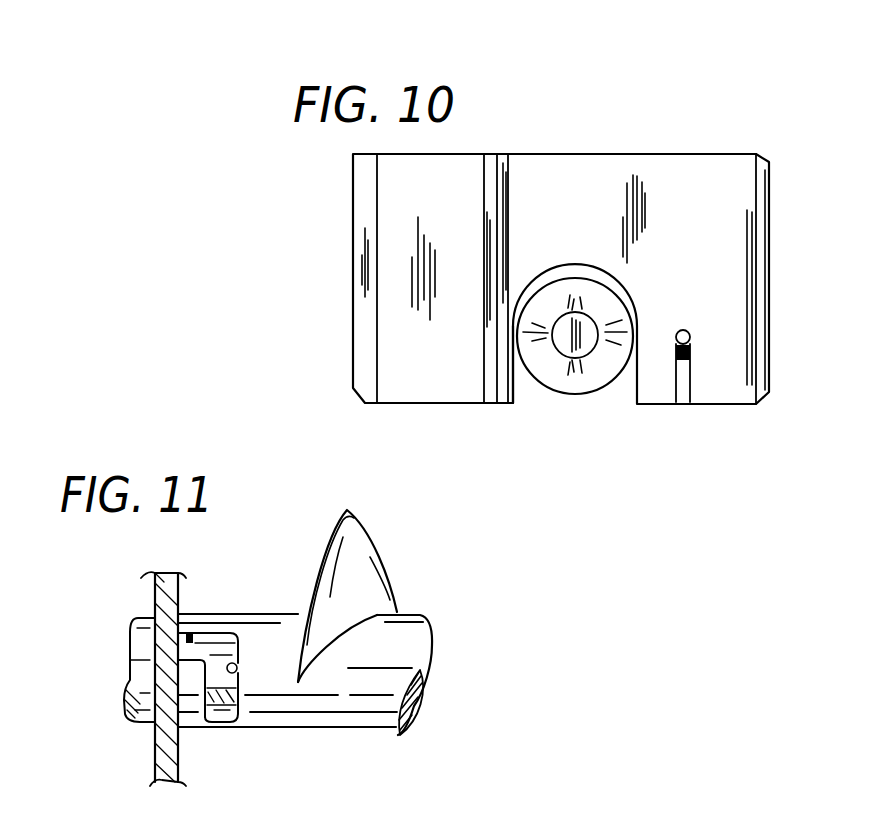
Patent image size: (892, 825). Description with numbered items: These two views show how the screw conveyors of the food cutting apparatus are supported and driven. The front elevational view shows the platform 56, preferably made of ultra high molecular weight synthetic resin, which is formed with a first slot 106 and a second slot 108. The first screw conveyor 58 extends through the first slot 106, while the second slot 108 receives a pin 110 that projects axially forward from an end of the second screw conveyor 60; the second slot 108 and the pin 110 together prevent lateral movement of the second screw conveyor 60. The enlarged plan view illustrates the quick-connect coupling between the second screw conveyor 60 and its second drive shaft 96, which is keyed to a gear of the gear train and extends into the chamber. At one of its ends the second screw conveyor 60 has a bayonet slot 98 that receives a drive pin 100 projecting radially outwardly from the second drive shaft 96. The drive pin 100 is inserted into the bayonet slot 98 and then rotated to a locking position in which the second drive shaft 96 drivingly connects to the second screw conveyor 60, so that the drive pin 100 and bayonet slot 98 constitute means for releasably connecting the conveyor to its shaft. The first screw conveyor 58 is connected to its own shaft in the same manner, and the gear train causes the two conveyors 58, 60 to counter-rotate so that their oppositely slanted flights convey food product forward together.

In FIG. 10, the platform 56 is at (664, 154).
In FIG. 10, the first screw conveyor 58 is at (596, 385).
In FIG. 10, the first slot 106 is at (513, 388).
In FIG. 10, the second slot 108 is at (678, 388).
In FIG. 10, the pin 110 is at (682, 330).
In FIG. 11, the second screw conveyor 60 is at (405, 635).
In FIG. 11, the second drive shaft 96 is at (202, 650).
In FIG. 11, the bayonet slot 98 is at (237, 667).
In FIG. 11, the drive pin 100 is at (228, 722).